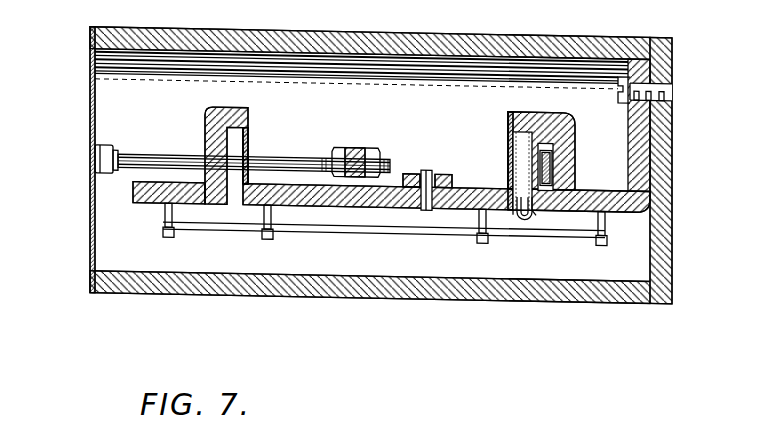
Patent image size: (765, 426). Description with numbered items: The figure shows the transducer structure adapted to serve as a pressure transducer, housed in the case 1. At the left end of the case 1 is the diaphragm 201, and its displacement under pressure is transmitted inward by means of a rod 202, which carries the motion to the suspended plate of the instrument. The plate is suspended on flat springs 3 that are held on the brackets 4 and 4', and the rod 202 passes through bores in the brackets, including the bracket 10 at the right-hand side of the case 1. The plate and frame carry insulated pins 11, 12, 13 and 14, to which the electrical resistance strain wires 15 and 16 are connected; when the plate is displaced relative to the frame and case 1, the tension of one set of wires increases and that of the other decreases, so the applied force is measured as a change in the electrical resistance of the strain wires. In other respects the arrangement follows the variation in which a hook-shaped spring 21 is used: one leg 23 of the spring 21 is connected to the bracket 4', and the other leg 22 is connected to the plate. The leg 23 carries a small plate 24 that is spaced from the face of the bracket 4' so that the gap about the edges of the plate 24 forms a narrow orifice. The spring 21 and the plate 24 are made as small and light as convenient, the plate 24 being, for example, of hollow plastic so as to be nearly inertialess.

The case 1 is at (299, 292).
The diaphragm 201 is at (90, 112).
The rod 202 is at (160, 130).
The bracket 4 is at (212, 146).
The flat spring 3 is at (246, 140).
The bracket 4' is at (541, 139).
The hook-shaped spring 21 is at (530, 135).
The plate 24 is at (548, 151).
The leg 22 is at (517, 194).
The leg 23 is at (540, 197).
The bracket 10 is at (638, 111).
The insulated pin 11 is at (168, 234).
The insulated pin 12 is at (603, 229).
The insulated pin 13 is at (265, 234).
The insulated pin 14 is at (483, 234).
The electrical resistance strain wire 15 is at (240, 228).
The electrical resistance strain wire 16 is at (387, 226).